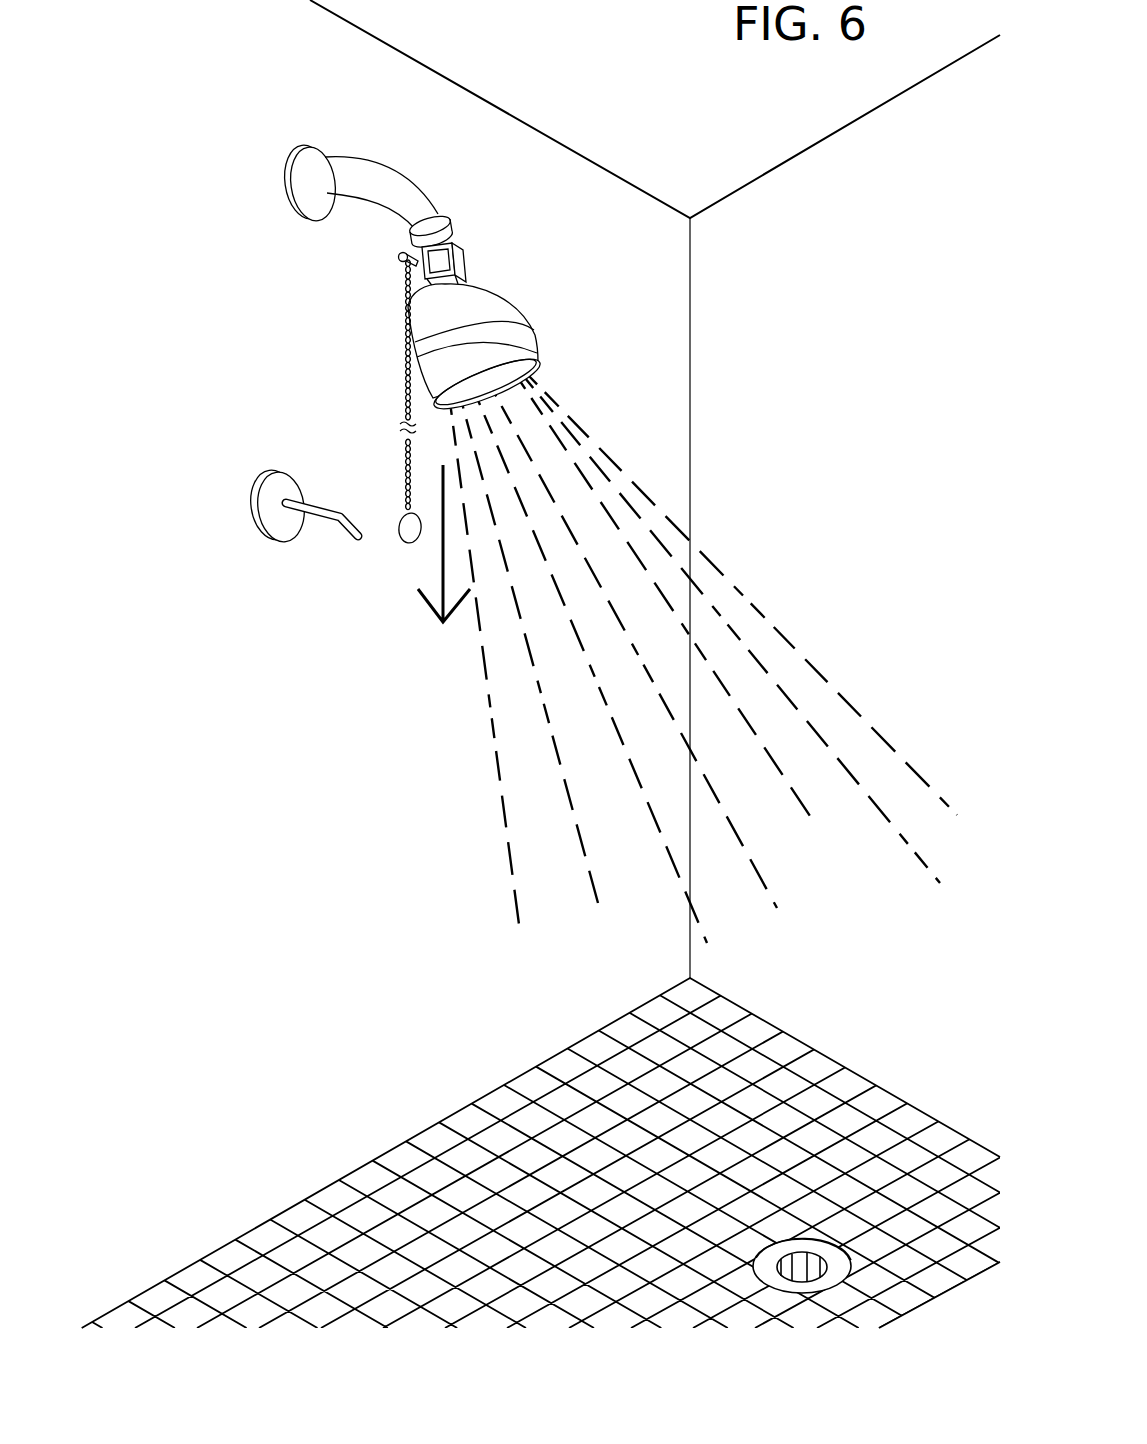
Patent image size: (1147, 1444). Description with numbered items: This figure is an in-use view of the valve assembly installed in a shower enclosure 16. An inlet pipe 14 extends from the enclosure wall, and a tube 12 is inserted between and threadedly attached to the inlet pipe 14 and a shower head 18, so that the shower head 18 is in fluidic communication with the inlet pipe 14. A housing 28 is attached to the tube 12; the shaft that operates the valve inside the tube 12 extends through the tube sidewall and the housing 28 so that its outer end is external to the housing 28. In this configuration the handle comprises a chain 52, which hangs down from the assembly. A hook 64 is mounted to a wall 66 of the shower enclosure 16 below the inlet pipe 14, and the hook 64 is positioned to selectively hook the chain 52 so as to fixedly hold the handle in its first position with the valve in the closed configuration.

The tube 12 is at (464, 248).
The inlet pipe 14 is at (386, 218).
The shower enclosure 16 is at (636, 256).
The shower head 18 is at (444, 333).
The housing 28 is at (444, 248).
The chain 52 is at (400, 468).
The hook 64 is at (337, 530).
The wall 66 is at (371, 644).